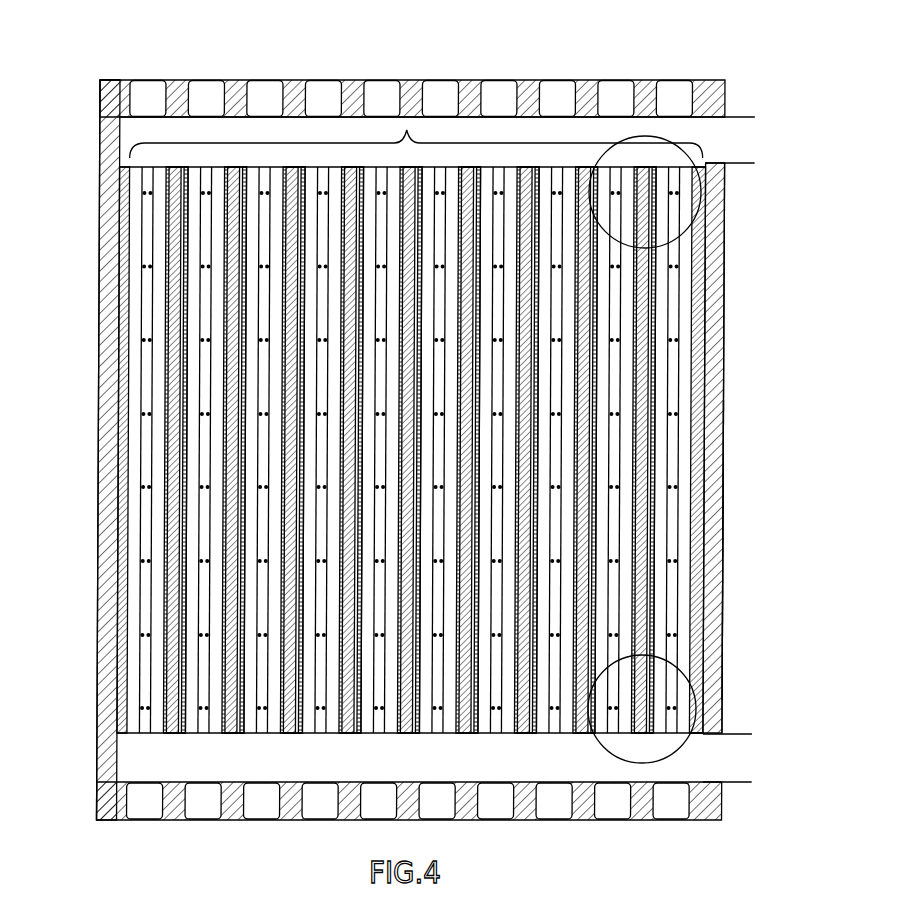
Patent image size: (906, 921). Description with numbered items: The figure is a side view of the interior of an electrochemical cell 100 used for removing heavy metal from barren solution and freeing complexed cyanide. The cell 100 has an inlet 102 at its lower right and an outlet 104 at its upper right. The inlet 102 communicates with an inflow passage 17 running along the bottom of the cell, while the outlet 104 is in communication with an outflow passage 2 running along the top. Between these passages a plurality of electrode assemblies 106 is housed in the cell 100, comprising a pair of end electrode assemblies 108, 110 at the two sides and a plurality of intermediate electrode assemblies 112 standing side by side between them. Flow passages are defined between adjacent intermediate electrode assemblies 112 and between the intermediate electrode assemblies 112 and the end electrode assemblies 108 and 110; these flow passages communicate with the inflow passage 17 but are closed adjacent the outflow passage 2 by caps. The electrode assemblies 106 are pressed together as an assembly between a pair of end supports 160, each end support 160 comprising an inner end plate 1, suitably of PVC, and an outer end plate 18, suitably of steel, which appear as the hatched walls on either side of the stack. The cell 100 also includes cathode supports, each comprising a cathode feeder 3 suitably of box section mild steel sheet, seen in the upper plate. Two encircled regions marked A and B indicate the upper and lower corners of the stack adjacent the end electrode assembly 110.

The electrochemical cell 100 is at (81, 291).
The intermediate electrode assemblies 112 is at (512, 152).
The inner end plates 1 is at (116, 80).
The outer end plates 18 is at (722, 576).
The end supports 160 is at (103, 68).
The cathode feeder 3 is at (663, 92).
The inflow passage 17 is at (180, 750).
The outflow passage 2 is at (253, 142).
The end electrode assembly 108 is at (127, 736).
The electrode assemblies 106 is at (408, 129).
The outlet 104 is at (720, 118).
The inlet 102 is at (737, 773).
The end electrode assembly 110 is at (692, 733).
The detail A is at (703, 197).
The detail B is at (702, 707).